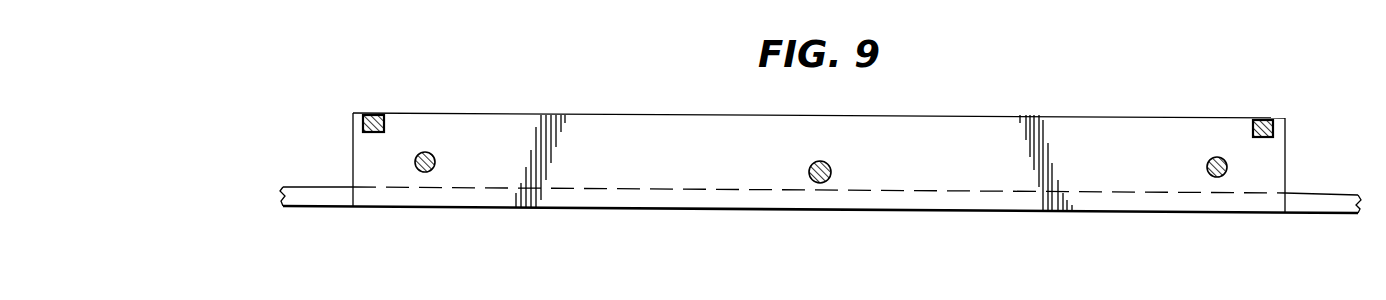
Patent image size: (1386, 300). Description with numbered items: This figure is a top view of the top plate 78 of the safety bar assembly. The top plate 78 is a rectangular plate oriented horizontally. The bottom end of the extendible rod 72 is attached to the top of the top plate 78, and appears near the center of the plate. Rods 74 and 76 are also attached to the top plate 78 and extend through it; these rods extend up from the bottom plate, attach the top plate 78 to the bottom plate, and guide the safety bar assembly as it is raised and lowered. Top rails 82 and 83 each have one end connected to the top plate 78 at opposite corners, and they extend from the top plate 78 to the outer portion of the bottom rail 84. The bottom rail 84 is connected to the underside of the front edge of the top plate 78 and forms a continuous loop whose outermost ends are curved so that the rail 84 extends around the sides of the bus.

The extendible rod 72 is at (811, 165).
The rod 74 is at (436, 160).
The rod 76 is at (1207, 167).
The top plate 78 is at (926, 133).
The top rail 82 is at (374, 113).
The top rail 83 is at (1264, 119).
The bottom rail 84 is at (324, 189).